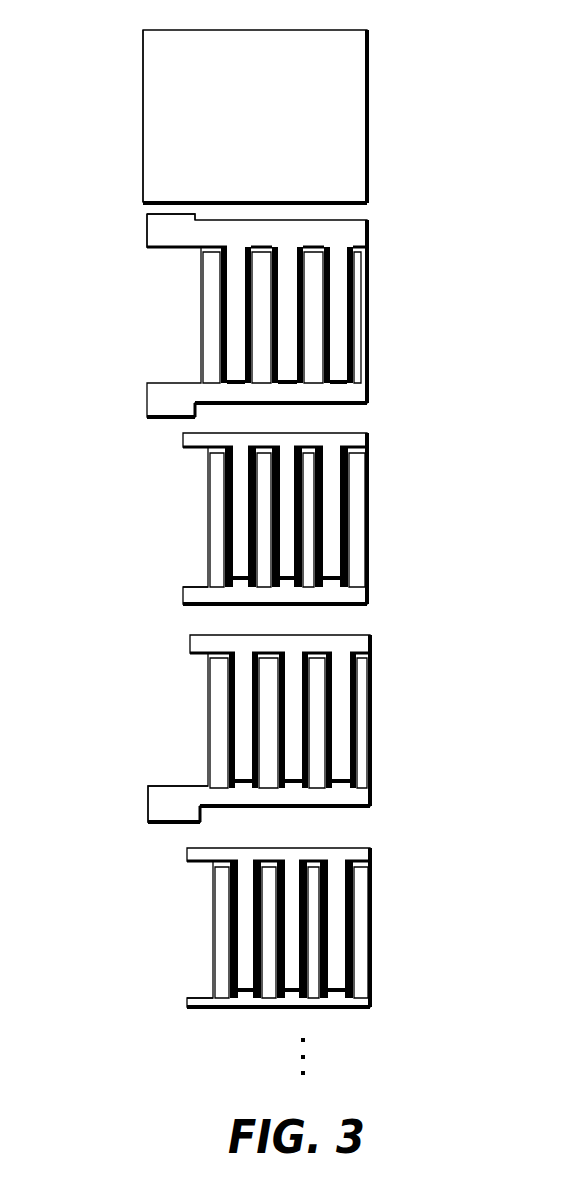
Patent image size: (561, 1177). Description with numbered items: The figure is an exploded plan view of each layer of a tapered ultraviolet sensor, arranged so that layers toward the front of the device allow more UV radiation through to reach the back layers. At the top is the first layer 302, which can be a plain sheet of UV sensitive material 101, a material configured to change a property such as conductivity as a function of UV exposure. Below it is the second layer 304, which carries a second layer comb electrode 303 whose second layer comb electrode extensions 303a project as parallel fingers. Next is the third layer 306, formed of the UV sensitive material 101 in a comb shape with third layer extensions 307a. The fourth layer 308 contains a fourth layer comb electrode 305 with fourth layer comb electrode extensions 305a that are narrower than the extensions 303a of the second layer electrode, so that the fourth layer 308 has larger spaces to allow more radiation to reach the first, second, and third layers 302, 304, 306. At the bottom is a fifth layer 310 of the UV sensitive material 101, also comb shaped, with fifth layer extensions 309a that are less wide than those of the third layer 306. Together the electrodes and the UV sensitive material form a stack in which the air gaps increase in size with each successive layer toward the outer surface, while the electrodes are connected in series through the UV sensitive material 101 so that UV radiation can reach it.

The UV sensitive material 101 is at (146, 118).
The first layer 302 is at (400, 100).
The second layer comb electrode 303 is at (167, 226).
The second layer comb electrode extensions 303a is at (212, 305).
The second layer 304 is at (400, 322).
The fourth layer comb electrode 305 is at (160, 795).
The fourth layer comb electrode extensions 305a is at (215, 716).
The third layer 306 is at (400, 527).
The third layer extensions 307a is at (218, 505).
The fourth layer 308 is at (400, 732).
The fifth layer extensions 309a is at (219, 922).
The fifth layer 310 is at (400, 942).